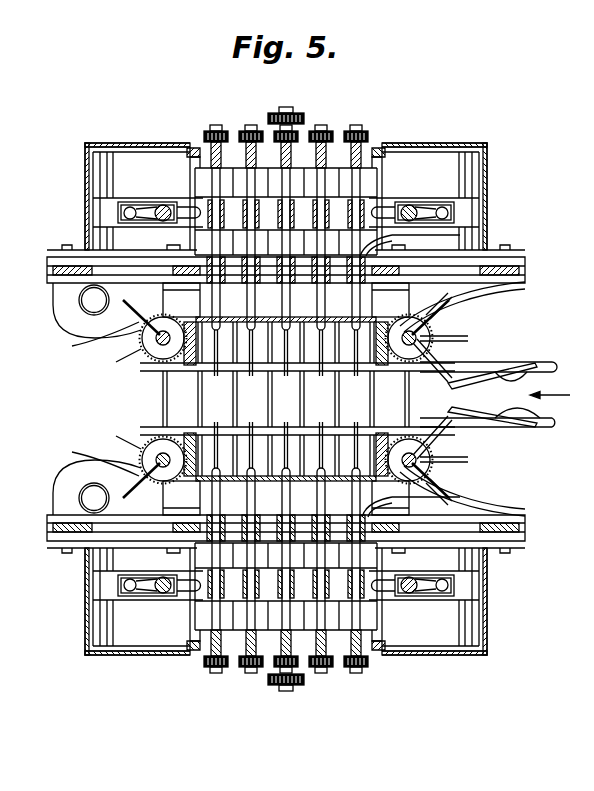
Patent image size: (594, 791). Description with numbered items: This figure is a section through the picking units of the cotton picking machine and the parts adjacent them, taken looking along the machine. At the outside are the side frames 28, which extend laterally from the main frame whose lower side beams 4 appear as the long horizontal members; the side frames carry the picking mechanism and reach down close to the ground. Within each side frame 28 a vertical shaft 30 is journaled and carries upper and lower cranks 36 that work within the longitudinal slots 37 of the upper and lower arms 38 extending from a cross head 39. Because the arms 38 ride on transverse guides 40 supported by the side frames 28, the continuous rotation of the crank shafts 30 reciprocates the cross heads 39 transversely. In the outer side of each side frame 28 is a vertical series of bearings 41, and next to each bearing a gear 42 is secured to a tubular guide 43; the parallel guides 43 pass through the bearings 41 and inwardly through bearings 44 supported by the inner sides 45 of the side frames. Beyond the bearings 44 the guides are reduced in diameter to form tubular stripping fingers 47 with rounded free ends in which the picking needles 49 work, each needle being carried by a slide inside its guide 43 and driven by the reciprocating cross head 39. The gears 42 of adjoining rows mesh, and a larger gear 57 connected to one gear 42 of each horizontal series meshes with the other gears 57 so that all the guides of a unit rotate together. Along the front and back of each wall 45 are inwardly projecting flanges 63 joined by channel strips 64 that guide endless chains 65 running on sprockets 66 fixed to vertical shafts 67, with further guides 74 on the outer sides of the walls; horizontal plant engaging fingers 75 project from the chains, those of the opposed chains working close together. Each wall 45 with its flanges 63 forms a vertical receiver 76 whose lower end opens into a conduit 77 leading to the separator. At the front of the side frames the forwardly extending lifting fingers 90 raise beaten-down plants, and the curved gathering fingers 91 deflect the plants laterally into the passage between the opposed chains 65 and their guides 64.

The lower side beam 4 is at (526, 262).
The side frame 28 is at (88, 143).
The vertical shaft 30 is at (158, 221).
The crank 36 is at (130, 206).
The longitudinal slot 37 is at (168, 198).
The arm 38 is at (96, 216).
The cross head 39 is at (367, 205).
The transverse guide 40 is at (102, 163).
The bearing 41 is at (193, 150).
The gear 42 is at (340, 150).
The tubular guide 43 is at (228, 176).
The bearing 44 is at (395, 237).
The inner side of side frame 45 is at (254, 328).
The stripping finger 47 is at (205, 300).
The needle 49 is at (334, 356).
The larger gear 57 is at (294, 112).
The flange 63 is at (413, 313).
The channel strip 64 is at (296, 366).
The endless chain 65 is at (85, 343).
The sprocket 66 is at (447, 316).
The vertical shaft 67 is at (424, 342).
The guide 74 is at (357, 330).
The plant engaging finger 75 is at (196, 394).
The vertical receiver 76 is at (380, 428).
The conduit 77 is at (80, 326).
The lifting finger 90 is at (540, 364).
The gathering finger 91 is at (505, 297).